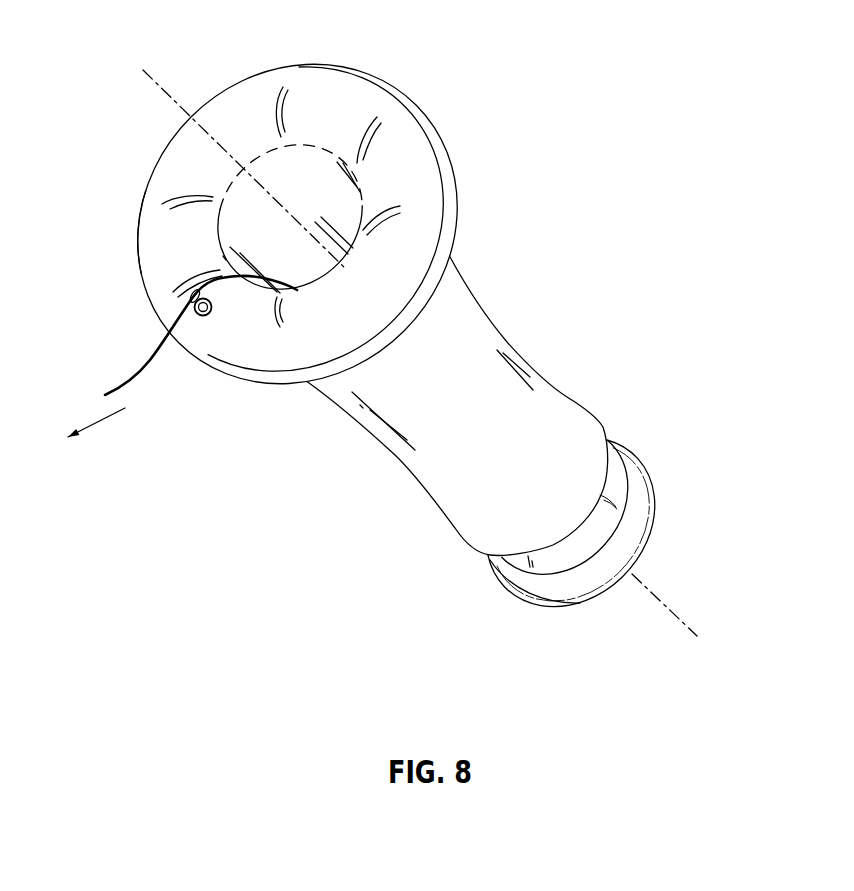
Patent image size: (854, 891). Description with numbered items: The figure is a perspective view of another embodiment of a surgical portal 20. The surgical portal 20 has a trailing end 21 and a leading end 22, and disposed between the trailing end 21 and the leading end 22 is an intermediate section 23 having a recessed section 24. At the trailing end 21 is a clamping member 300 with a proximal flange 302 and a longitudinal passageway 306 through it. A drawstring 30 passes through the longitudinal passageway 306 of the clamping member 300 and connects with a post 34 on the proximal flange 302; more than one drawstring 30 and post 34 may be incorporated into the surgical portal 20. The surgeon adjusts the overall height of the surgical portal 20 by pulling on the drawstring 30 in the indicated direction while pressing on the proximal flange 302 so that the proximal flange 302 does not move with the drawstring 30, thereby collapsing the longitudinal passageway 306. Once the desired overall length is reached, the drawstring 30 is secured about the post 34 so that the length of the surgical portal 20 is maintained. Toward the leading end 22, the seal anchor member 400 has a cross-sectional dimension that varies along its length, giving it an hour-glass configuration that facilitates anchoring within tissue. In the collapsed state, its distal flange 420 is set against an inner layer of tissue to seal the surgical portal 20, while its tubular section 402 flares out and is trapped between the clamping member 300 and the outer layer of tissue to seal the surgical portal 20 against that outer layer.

The surgical portal 20 is at (620, 237).
The trailing end 21 is at (139, 260).
The leading end 22 is at (650, 503).
The intermediate section 23 is at (395, 476).
The recessed section 24 is at (619, 462).
The drawstring 30 is at (145, 367).
The post 34 is at (196, 318).
The clamping member 300 is at (482, 142).
The proximal flange 302 is at (347, 98).
The longitudinal passageway 306 is at (262, 228).
The seal anchor member 400 is at (652, 379).
The tubular section 402 is at (480, 318).
The distal flange 420 is at (496, 587).